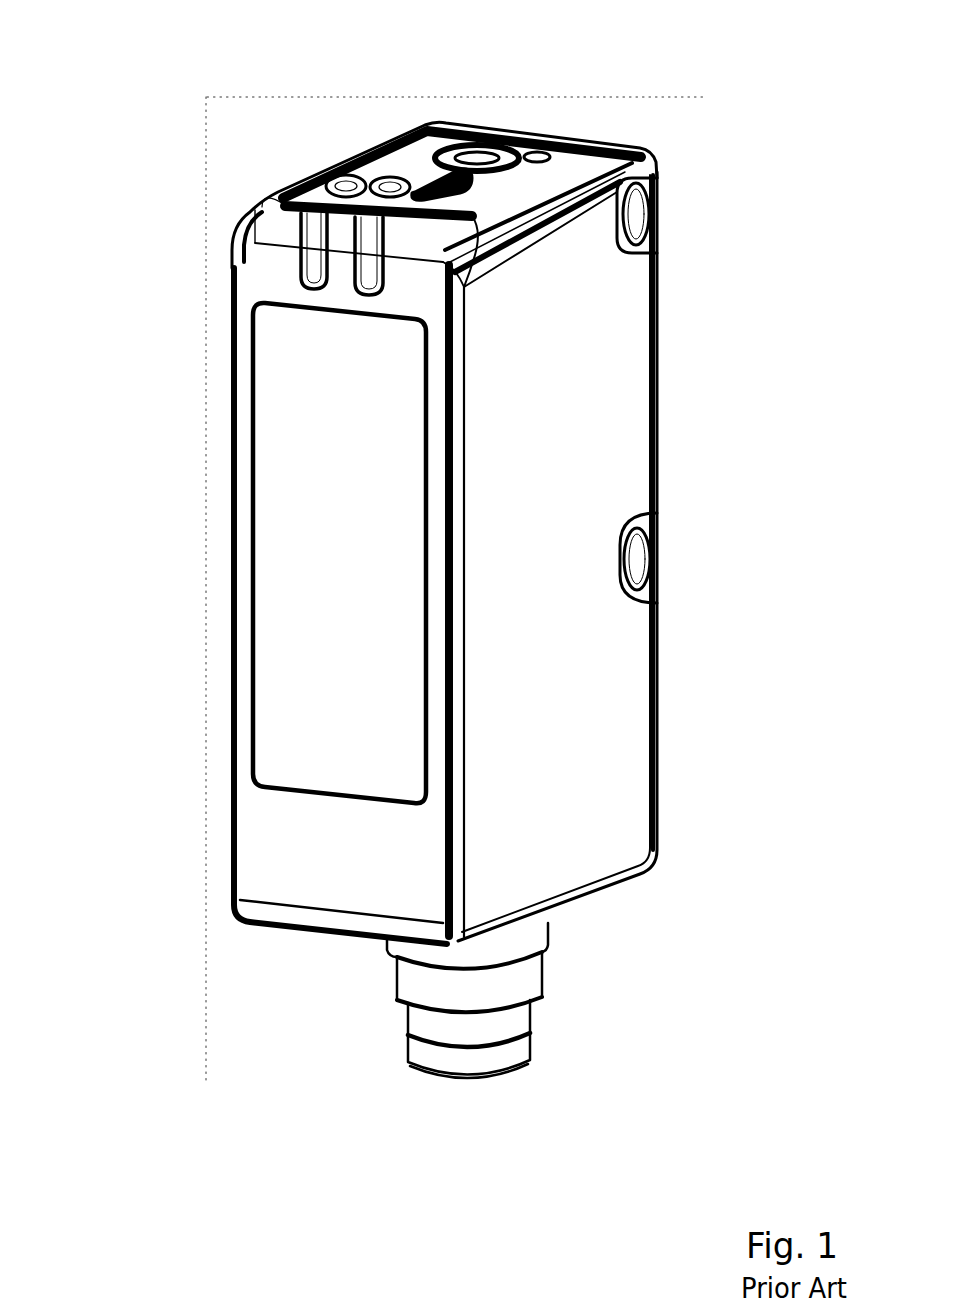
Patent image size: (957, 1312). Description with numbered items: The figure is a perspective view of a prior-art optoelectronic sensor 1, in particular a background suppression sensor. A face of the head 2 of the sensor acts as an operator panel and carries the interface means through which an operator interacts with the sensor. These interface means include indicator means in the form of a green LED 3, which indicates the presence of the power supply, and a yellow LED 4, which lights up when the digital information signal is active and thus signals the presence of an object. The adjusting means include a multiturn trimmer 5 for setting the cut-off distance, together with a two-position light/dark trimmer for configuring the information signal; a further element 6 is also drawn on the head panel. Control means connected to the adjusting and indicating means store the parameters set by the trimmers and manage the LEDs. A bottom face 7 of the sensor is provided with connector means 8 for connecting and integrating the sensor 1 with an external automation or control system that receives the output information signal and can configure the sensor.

The optoelectronic sensor 1 is at (188, 336).
The head 2 is at (560, 153).
The green LED 3 is at (325, 190).
The yellow LED 4 is at (372, 177).
The multiturn trimmer 5 is at (422, 173).
The rotary adjuster 6 is at (480, 152).
The bottom face 7 is at (612, 908).
The connector means 8 is at (492, 977).